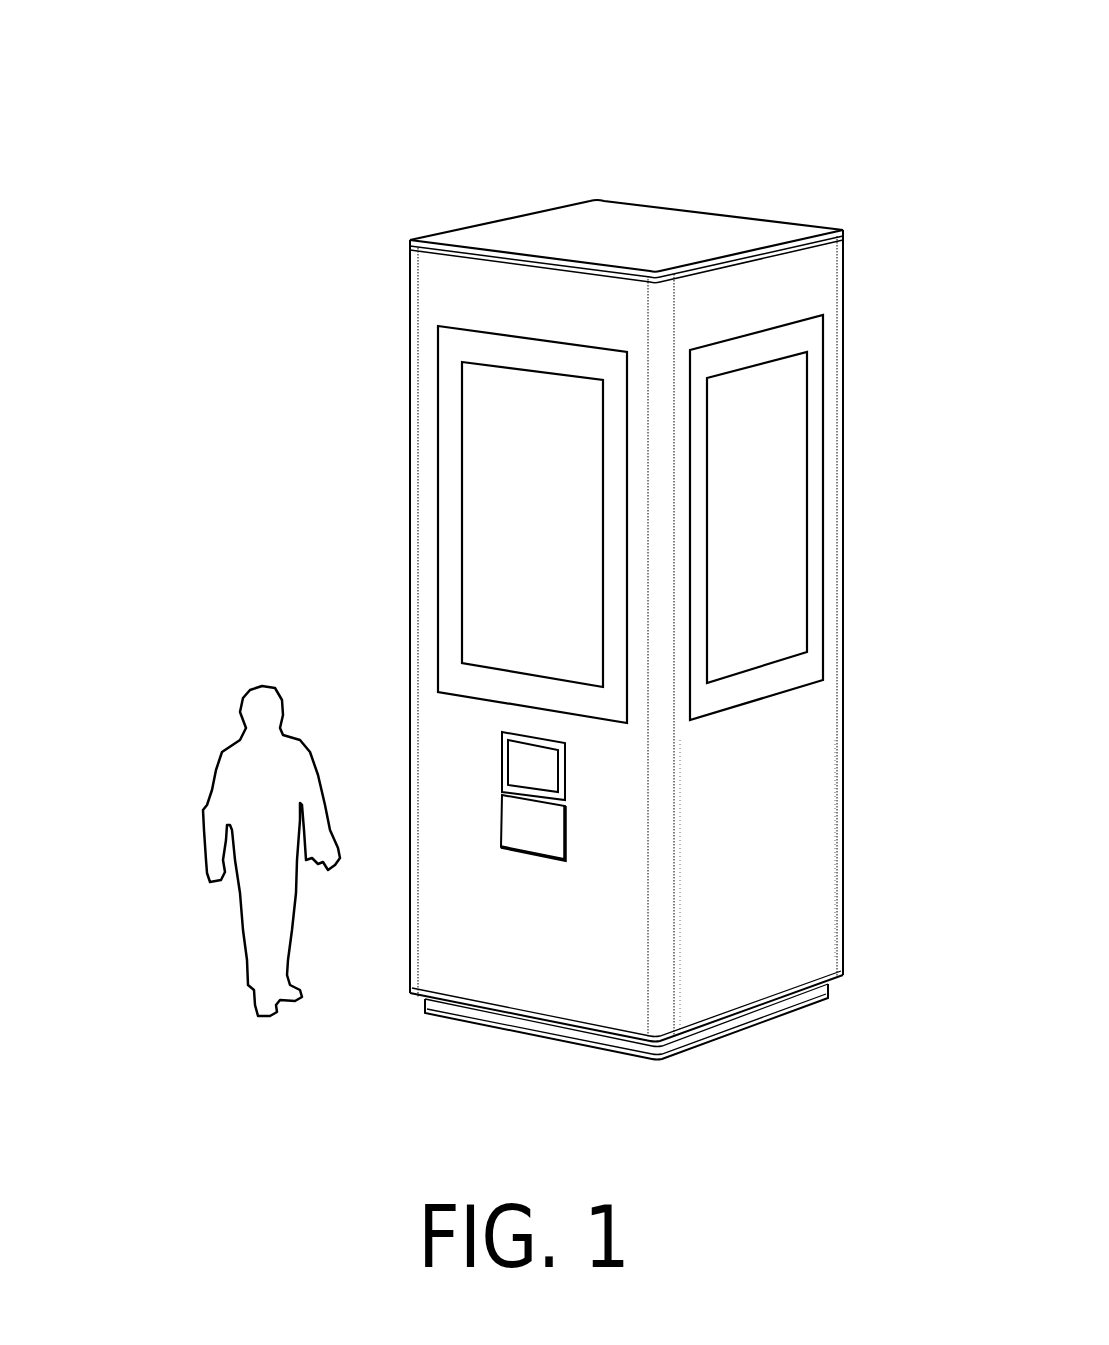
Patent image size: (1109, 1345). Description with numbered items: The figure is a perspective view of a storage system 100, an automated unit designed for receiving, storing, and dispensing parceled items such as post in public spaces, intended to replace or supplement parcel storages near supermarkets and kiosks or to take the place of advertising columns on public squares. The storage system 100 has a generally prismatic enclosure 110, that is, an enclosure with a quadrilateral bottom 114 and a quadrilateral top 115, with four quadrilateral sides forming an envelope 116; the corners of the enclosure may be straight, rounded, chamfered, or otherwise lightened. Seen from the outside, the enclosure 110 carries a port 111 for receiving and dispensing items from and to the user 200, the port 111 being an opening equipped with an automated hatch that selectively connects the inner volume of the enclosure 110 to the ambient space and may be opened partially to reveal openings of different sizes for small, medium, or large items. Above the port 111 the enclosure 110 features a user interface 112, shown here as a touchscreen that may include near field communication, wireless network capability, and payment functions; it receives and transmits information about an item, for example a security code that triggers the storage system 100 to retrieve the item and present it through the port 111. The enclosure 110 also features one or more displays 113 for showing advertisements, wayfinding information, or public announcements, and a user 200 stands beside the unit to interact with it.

The storage system 100 is at (352, 212).
The enclosure 110 is at (850, 218).
The port 111 is at (528, 828).
The user interface 112 is at (528, 765).
The display 113 is at (528, 593).
The bottom 114 is at (762, 1022).
The top 115 is at (664, 223).
The envelope 116 is at (770, 781).
The user 200 is at (227, 773).